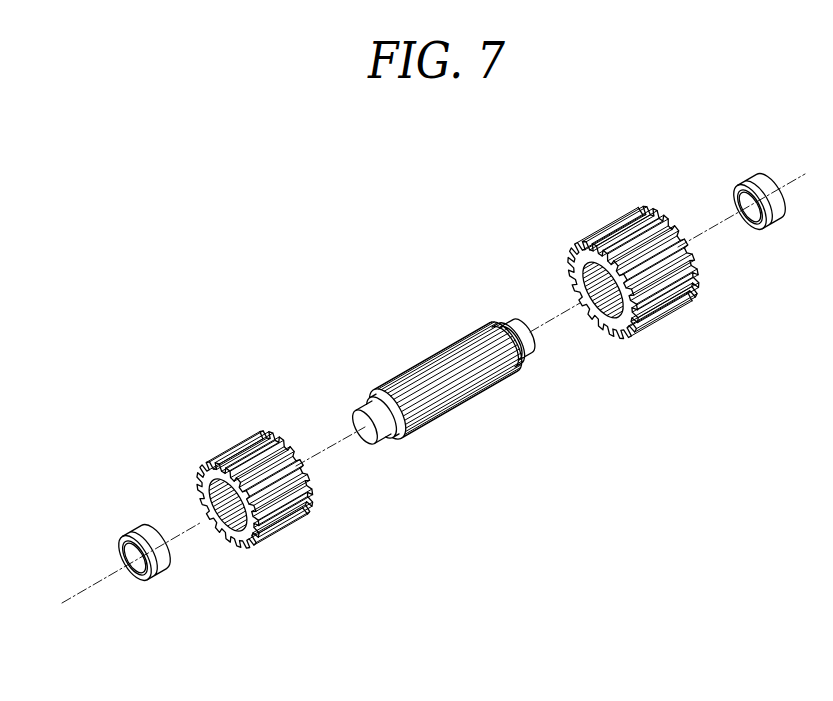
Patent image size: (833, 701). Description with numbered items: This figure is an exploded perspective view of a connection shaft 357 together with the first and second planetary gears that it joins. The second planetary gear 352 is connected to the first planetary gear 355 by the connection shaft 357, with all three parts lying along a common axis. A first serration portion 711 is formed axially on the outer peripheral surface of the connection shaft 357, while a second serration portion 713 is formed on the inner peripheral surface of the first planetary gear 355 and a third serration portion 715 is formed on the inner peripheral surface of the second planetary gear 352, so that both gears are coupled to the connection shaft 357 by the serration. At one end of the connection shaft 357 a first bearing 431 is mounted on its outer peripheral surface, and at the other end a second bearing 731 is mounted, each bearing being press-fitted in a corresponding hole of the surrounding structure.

The second planetary gear 352 is at (625, 221).
The first planetary gear 355 is at (247, 450).
The connection shaft 357 is at (426, 349).
The first bearing 431 is at (138, 528).
The first serration portion 711 is at (449, 409).
The second serration portion 713 is at (250, 546).
The third serration portion 715 is at (625, 340).
The second bearing 731 is at (762, 183).